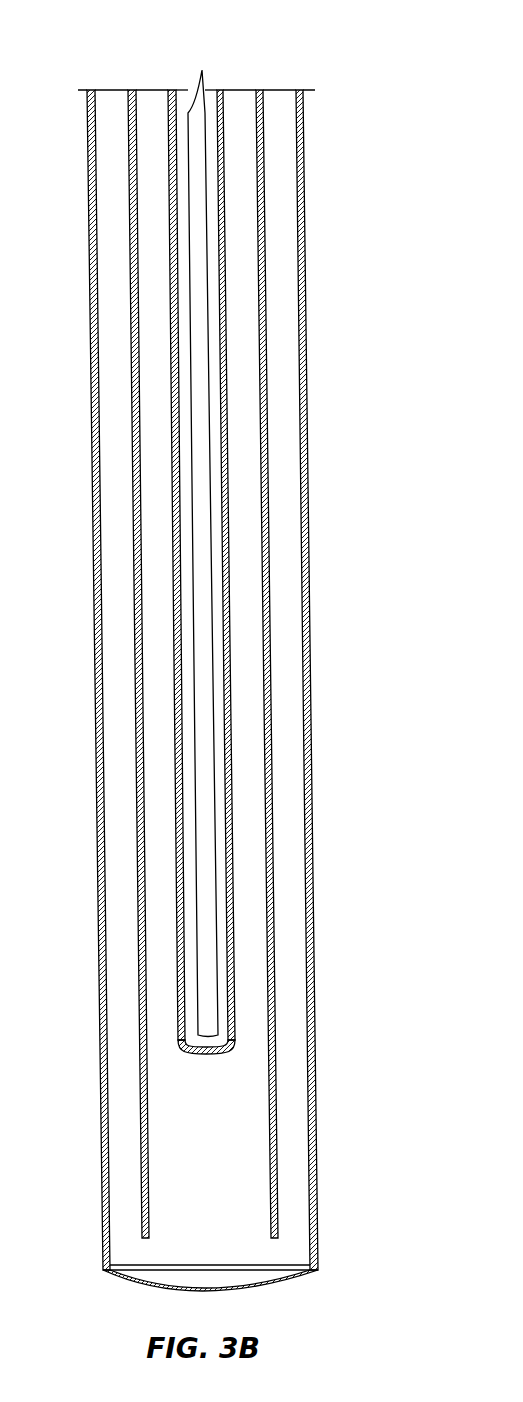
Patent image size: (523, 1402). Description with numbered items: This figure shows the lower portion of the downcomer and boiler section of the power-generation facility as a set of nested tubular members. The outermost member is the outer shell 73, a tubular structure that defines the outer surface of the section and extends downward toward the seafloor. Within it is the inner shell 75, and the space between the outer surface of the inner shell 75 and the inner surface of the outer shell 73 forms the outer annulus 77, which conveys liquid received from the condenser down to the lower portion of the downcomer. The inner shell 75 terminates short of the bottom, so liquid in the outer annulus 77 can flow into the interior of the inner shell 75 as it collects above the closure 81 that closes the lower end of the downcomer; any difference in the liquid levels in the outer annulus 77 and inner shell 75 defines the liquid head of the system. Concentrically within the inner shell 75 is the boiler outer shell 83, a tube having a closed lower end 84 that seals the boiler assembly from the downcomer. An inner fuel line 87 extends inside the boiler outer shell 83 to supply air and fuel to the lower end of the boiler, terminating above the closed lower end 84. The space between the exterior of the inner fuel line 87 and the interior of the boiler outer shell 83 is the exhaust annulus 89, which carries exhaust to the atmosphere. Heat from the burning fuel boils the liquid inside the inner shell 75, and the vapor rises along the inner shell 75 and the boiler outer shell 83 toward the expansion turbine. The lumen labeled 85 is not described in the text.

The outer shell 73 is at (305, 350).
The inner shell 75 is at (265, 280).
The outer annulus 77 is at (293, 171).
The closure 81 is at (128, 1283).
The boiler outer shell 83 is at (223, 218).
The closed lower end 84 is at (206, 1056).
The inner lumen 85 is at (252, 171).
The inner fuel line 87 is at (207, 120).
The exhaust annulus 89 is at (179, 89).